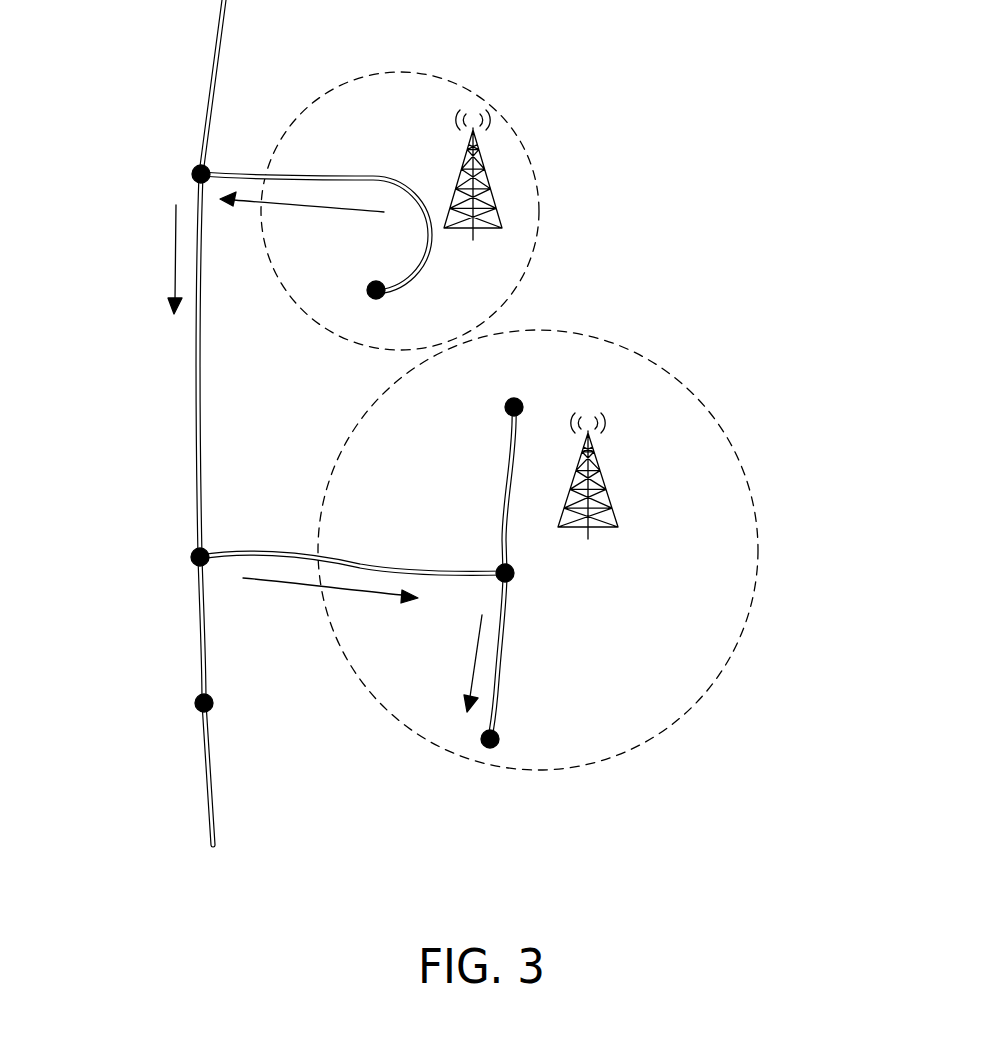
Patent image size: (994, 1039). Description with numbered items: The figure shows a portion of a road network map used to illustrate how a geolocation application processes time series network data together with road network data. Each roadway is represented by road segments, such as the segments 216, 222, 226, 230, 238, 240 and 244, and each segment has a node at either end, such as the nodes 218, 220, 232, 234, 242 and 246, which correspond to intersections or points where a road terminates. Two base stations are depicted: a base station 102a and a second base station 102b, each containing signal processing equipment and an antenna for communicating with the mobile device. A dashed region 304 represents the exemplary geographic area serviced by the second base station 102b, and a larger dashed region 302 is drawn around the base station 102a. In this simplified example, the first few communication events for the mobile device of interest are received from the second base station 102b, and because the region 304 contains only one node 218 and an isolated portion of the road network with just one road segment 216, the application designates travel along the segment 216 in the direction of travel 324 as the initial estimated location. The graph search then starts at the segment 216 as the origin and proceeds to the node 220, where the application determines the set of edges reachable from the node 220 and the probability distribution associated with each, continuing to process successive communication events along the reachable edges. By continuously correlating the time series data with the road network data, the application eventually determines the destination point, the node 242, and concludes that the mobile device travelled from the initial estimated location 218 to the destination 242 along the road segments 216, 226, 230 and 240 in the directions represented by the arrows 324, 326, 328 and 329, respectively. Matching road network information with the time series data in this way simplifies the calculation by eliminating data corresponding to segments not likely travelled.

The base station 102a is at (600, 473).
The second base station 102b is at (483, 168).
The road segment 216 is at (352, 178).
The node 218 is at (373, 298).
The node 220 is at (208, 168).
The road segment 222 is at (206, 95).
The road segment 226 is at (197, 428).
The road segment 230 is at (382, 560).
The node 232 is at (194, 557).
The node 234 is at (512, 573).
The road segment 238 is at (197, 696).
The road segment 240 is at (504, 656).
The node 242 is at (498, 738).
The road segment 244 is at (506, 473).
The node 246 is at (522, 403).
The region 302 is at (694, 386).
The region 304 is at (487, 103).
The direction of travel 324 is at (308, 212).
The arrow 326 is at (173, 248).
The arrow 328 is at (288, 583).
The arrow 329 is at (477, 662).